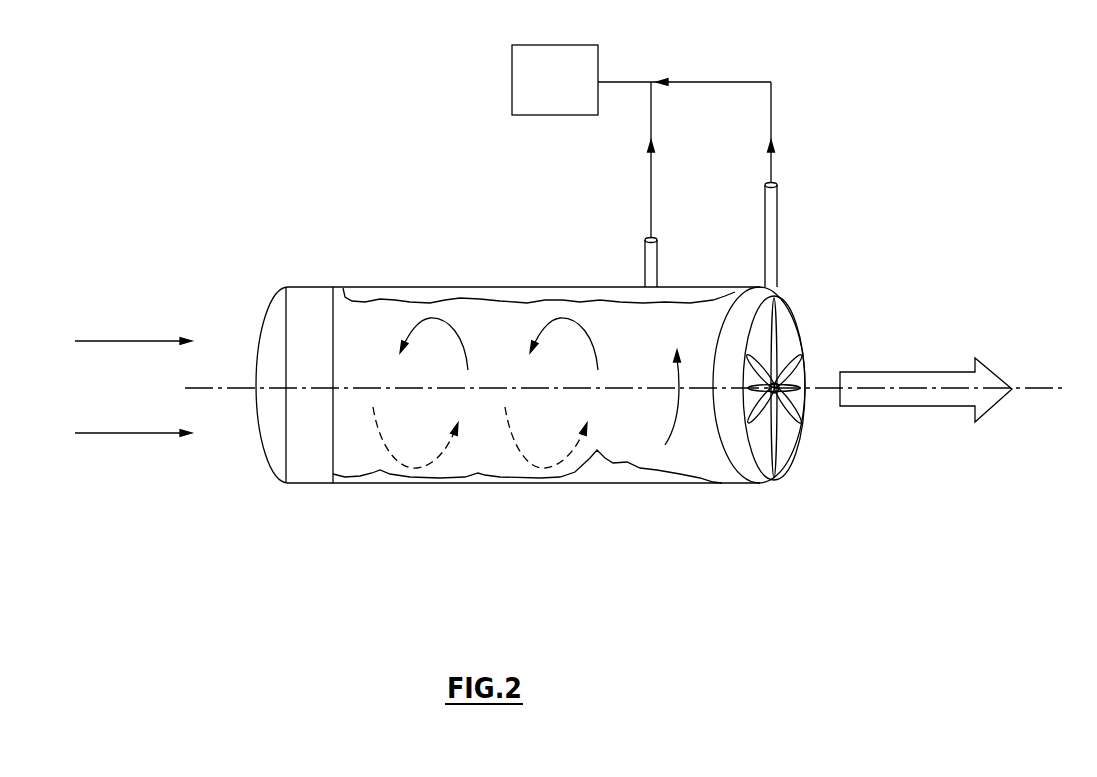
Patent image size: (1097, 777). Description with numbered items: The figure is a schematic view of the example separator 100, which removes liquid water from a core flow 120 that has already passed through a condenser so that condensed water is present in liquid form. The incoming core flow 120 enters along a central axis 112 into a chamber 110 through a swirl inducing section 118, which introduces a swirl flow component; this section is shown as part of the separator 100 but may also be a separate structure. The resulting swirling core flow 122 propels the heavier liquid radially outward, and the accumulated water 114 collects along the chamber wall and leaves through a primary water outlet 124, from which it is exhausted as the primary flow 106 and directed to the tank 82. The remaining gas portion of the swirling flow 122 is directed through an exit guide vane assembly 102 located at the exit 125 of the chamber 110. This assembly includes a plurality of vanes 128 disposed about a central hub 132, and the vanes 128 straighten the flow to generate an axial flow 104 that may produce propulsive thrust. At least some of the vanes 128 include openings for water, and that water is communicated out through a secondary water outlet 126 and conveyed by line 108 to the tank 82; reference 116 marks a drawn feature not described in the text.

The tank 82 is at (598, 62).
The separator 100 is at (577, 326).
The exit guide vane assembly 102 is at (757, 490).
The axial flow 104 is at (917, 408).
The primary flow 106 is at (651, 186).
The second water conduit 108 is at (771, 165).
The chamber 110 is at (360, 452).
The central axis 112 is at (1033, 388).
The accumulated water 114 is at (436, 282).
The inlet baffle plate 116 is at (326, 296).
The swirl inducing section 118 is at (305, 428).
The core flow 120 is at (132, 373).
The swirling core flow 122 is at (466, 345).
The primary water outlet 124 is at (645, 268).
The exit 125 is at (807, 307).
The secondary water outlet 126 is at (775, 245).
The vanes 128 is at (797, 417).
The central hub 132 is at (779, 385).